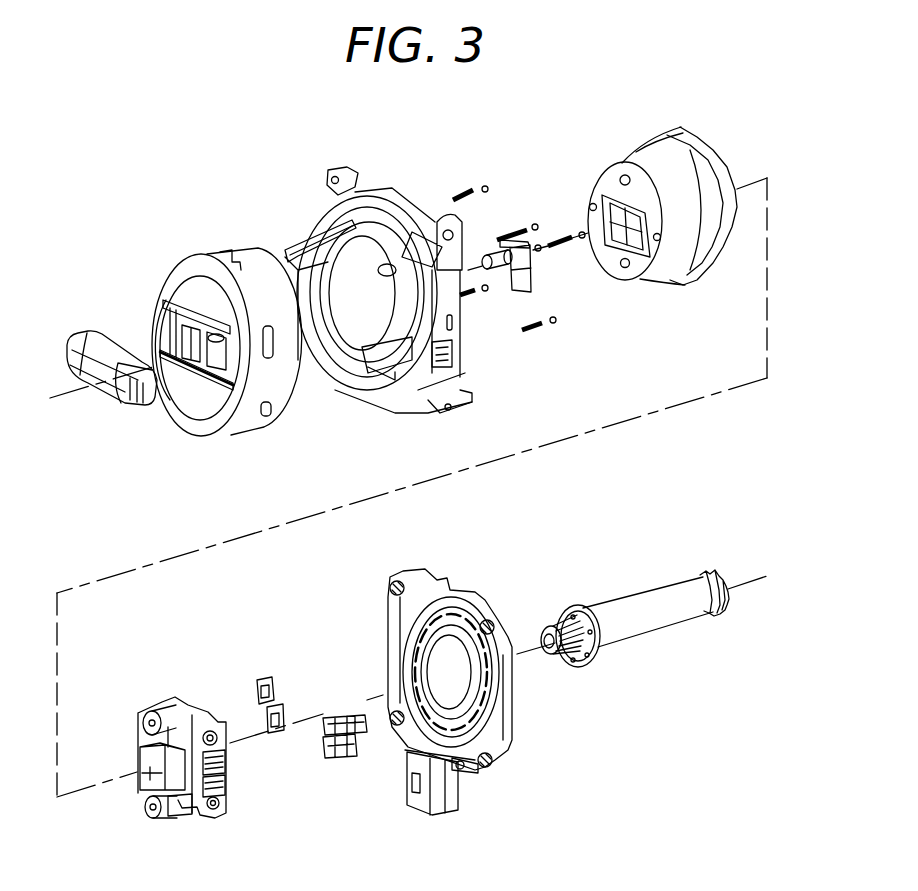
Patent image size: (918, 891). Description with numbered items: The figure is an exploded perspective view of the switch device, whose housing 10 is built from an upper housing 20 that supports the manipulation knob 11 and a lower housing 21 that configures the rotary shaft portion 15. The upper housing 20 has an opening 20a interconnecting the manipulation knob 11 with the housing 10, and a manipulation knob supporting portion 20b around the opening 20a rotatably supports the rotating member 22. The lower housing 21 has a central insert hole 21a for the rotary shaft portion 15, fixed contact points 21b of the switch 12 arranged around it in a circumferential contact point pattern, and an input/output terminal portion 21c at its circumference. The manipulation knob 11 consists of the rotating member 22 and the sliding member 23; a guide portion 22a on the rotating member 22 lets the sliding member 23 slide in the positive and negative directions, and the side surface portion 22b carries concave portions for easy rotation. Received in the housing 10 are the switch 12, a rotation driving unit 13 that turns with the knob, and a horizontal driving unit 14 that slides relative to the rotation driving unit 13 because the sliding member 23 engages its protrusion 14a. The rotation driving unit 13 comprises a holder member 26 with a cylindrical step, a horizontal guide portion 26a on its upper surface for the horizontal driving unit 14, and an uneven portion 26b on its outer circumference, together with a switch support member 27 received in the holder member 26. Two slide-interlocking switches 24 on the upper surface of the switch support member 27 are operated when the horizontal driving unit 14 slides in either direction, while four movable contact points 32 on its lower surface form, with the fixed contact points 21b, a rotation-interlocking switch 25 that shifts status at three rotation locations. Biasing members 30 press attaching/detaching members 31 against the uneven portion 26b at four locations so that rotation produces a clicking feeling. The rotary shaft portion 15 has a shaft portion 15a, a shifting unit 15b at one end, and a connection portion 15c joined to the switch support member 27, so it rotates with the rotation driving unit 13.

The housing 10 is at (477, 487).
The manipulation knob 11 is at (150, 226).
The switch 12 is at (195, 820).
The rotation driving unit 13 is at (655, 134).
The horizontal driving unit 14 is at (497, 240).
The protrusion 14a is at (493, 255).
The rotary shaft portion 15 is at (650, 593).
The shaft portion 15a is at (650, 636).
The shifting unit 15b is at (713, 615).
The connection portion 15c is at (553, 624).
The upper housing 20 is at (393, 400).
The opening 20a is at (380, 208).
The manipulation knob supporting portion 20b is at (286, 260).
The lower housing 21 is at (427, 580).
The insert hole 21a is at (500, 713).
The fixed contact points 21b is at (478, 773).
The input/output terminal portion 21c is at (452, 815).
The rotating member 22 is at (168, 271).
The guide portion 22a is at (167, 311).
The side surface portion 22b is at (258, 294).
The sliding member 23 is at (98, 336).
The slide-interlocking switches 24 is at (148, 815).
The rotation-interlocking switch 25 is at (397, 650).
The holder member 26 is at (622, 155).
The horizontal guide portion 26a is at (620, 198).
The uneven portion 26b is at (713, 190).
The switch support member 27 is at (170, 817).
The biasing members 30 is at (465, 188).
The attaching/detaching members 31 is at (486, 184).
The movable contact points 32 is at (357, 748).